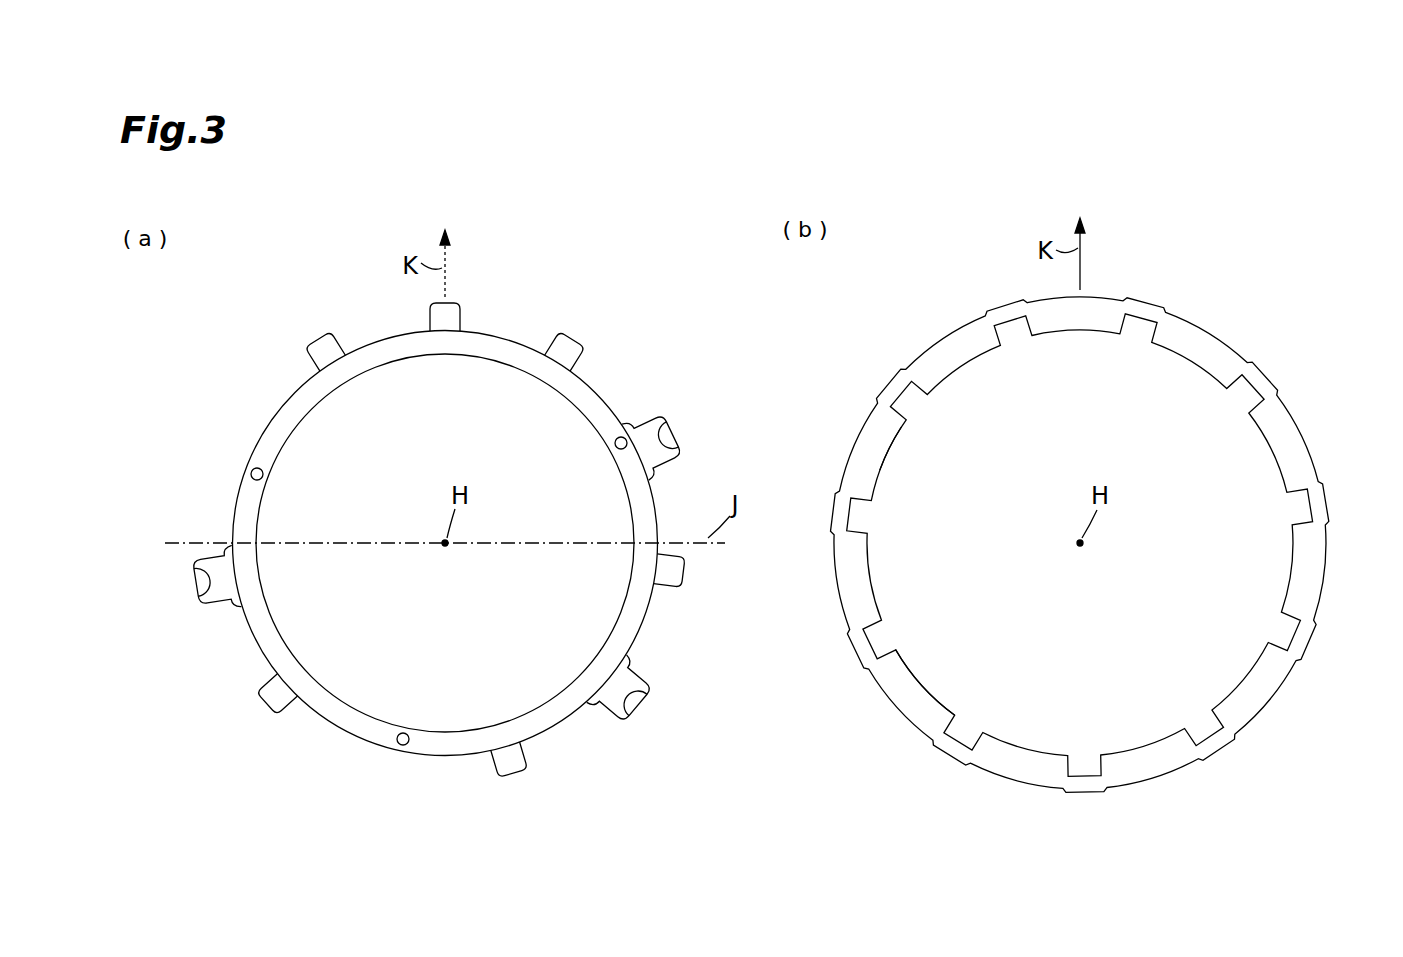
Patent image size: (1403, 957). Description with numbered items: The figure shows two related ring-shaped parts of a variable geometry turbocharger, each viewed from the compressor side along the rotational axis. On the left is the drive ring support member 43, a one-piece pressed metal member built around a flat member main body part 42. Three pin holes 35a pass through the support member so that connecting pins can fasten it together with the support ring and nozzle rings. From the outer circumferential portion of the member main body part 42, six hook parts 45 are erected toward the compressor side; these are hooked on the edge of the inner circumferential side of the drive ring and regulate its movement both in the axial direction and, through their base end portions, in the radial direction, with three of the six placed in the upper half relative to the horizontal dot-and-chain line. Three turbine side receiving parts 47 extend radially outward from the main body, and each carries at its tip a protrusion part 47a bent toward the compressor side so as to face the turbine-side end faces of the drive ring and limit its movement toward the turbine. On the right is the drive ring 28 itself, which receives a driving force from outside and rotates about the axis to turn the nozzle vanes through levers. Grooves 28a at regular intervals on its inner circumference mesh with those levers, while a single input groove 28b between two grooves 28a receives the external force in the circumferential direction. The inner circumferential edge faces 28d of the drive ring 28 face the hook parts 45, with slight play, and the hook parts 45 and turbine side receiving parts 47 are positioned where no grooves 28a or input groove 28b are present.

The drive ring 28 is at (1258, 284).
The grooves 28a is at (1143, 322).
The input groove 28b is at (880, 445).
The inner circumferential edge faces 28d is at (915, 678).
The pin holes 35a is at (623, 437).
The member main body part 42 is at (300, 402).
The drive ring support member 43 is at (628, 326).
The hook parts 45 is at (322, 347).
The turbine side receiving parts 47 is at (678, 470).
The protrusion part 47a is at (668, 440).